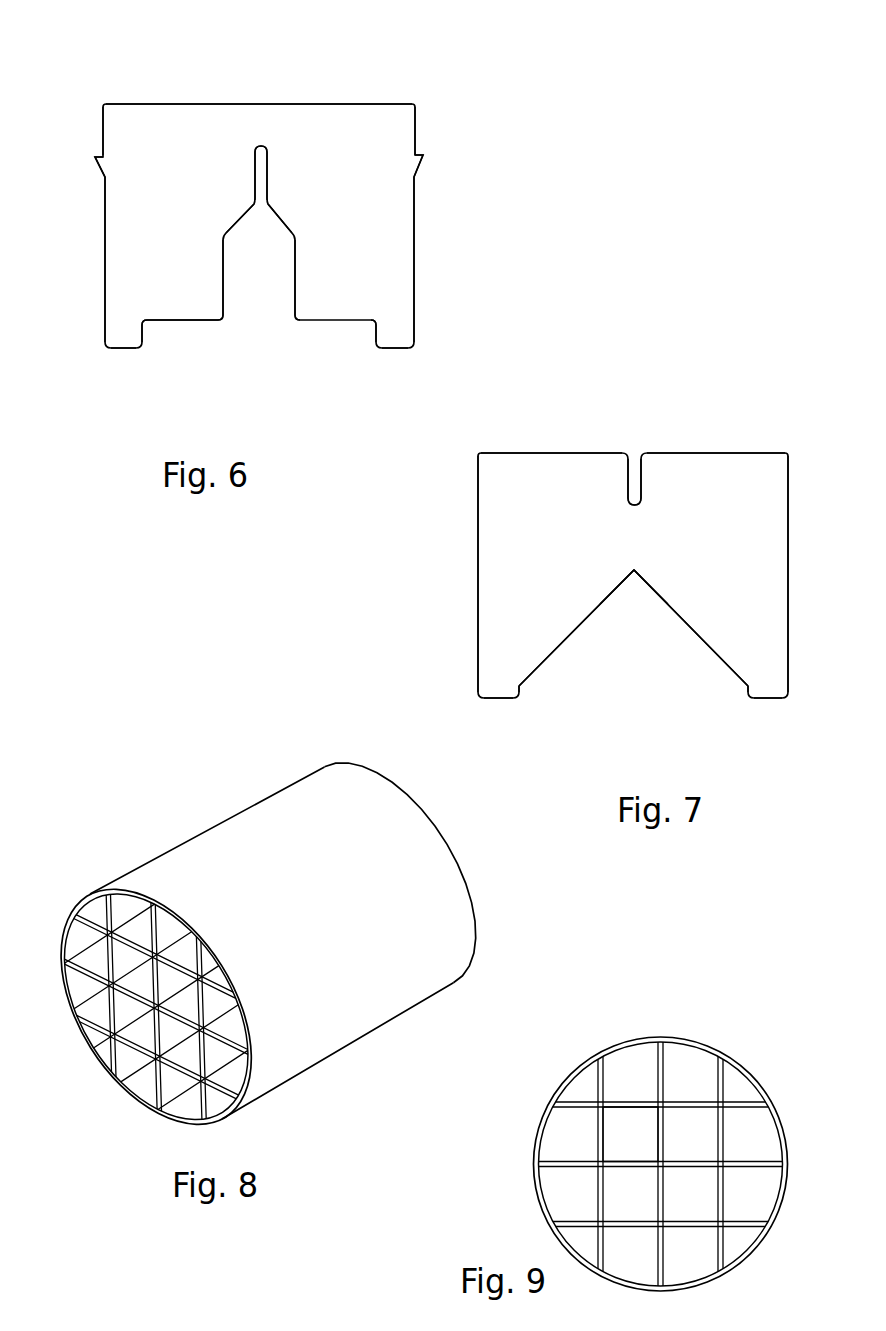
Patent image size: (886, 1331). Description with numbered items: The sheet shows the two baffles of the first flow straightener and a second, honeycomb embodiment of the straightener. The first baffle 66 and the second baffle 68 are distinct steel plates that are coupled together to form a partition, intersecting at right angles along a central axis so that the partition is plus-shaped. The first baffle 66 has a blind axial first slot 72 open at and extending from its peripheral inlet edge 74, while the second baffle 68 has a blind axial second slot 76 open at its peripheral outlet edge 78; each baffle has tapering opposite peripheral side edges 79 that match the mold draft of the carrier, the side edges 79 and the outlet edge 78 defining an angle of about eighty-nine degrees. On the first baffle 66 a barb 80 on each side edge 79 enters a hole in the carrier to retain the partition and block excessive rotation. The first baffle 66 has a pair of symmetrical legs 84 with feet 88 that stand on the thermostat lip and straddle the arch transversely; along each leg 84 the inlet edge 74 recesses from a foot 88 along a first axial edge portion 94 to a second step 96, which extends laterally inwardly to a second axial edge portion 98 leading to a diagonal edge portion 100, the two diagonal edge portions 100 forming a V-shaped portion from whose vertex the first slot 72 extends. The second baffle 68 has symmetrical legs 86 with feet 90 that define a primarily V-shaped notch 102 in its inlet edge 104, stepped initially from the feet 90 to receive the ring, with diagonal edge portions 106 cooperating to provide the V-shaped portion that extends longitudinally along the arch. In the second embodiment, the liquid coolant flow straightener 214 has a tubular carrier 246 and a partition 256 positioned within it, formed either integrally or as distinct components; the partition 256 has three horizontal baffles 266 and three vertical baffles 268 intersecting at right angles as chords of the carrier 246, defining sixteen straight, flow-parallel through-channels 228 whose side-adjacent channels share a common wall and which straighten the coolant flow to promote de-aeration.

In FIG. 6, the first baffle 66 is at (374, 67).
In FIG. 7, the second baffle 68 is at (747, 414).
In FIG. 6, the peripheral outlet edge 78 is at (218, 104).
In FIG. 7, the peripheral outlet edge 78 is at (689, 453).
In FIG. 6, the barb 80 is at (424, 158).
In FIG. 6, the peripheral side edges 79 is at (415, 212).
In FIG. 7, the peripheral side edges 79 is at (788, 556).
In FIG. 6, the legs 84 is at (380, 247).
In FIG. 6, the first slot 72 is at (255, 158).
In FIG. 6, the diagonal edge portion 100 is at (218, 243).
In FIG. 6, the peripheral inlet edge 74 is at (186, 322).
In FIG. 7, the peripheral inlet edge 74 is at (695, 655).
In FIG. 6, the second axial edge portion 98 is at (295, 278).
In FIG. 6, the second step 96 is at (338, 335).
In FIG. 6, the first axial edge portion 94 is at (368, 340).
In FIG. 6, the feet 88 is at (392, 350).
In FIG. 7, the second slot 76 is at (630, 490).
In FIG. 7, the legs 86 is at (765, 627).
In FIG. 7, the notch 102 is at (575, 655).
In FIG. 7, the diagonal edge portion 106 is at (670, 612).
In FIG. 7, the inlet edge 104 is at (745, 690).
In FIG. 7, the feet 90 is at (772, 700).
In FIG. 8, the liquid coolant flow straightener 214 is at (177, 764).
In FIG. 9, the liquid coolant flow straightener 214 is at (517, 1070).
In FIG. 8, the tubular carrier 246 is at (183, 867).
In FIG. 9, the tubular carrier 246 is at (535, 1178).
In FIG. 8, the through-channels 228 is at (98, 1062).
In FIG. 8, the vertical baffles 268 is at (215, 1008).
In FIG. 9, the vertical baffles 268 is at (722, 1087).
In FIG. 8, the horizontal baffles 266 is at (225, 1095).
In FIG. 9, the horizontal baffles 266 is at (745, 1225).
In FIG. 8, the partition 256 is at (144, 1087).
In FIG. 9, the partition 256 is at (571, 1190).